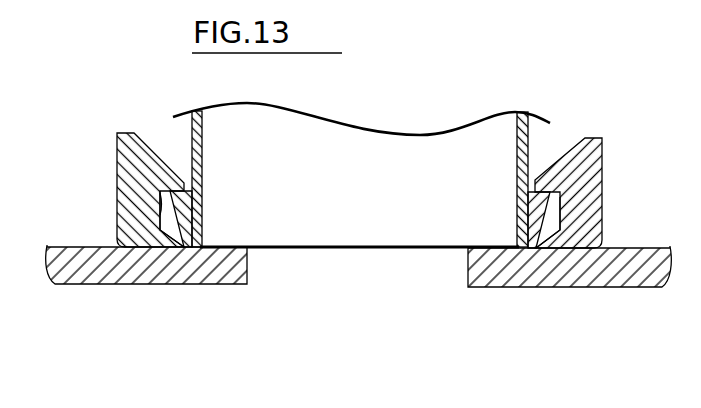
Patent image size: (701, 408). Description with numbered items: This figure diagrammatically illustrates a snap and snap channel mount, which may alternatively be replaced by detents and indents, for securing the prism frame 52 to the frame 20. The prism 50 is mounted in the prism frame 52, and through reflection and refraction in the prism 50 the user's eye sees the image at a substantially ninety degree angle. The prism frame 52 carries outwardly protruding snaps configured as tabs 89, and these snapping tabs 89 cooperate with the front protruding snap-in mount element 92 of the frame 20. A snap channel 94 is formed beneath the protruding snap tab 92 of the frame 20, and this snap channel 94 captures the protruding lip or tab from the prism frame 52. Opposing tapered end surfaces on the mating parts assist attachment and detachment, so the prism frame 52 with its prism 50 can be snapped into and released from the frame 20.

The prism 50 is at (373, 178).
The prism frame 52 is at (190, 135).
The frame 20 is at (87, 285).
The snap-in mount element 92 is at (117, 157).
The snap channel 94 is at (160, 190).
The tabs 89 is at (180, 245).